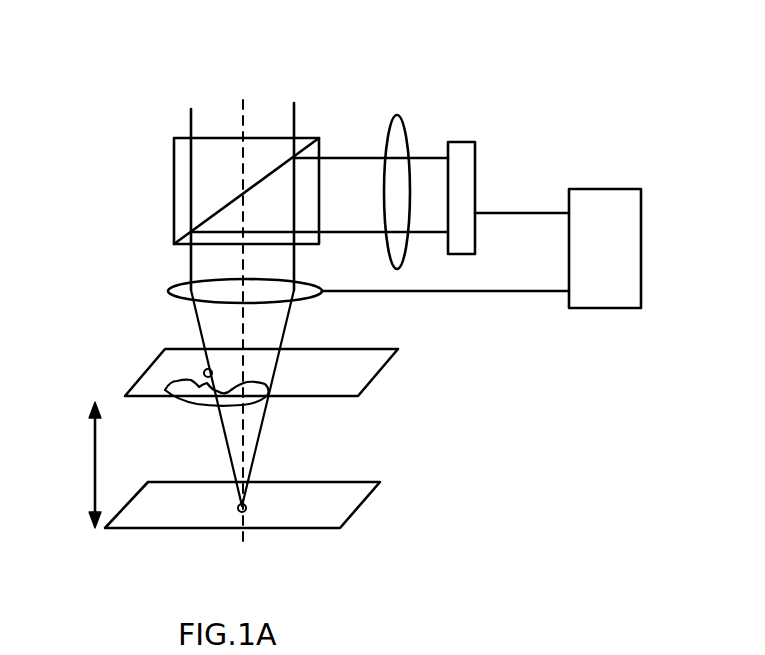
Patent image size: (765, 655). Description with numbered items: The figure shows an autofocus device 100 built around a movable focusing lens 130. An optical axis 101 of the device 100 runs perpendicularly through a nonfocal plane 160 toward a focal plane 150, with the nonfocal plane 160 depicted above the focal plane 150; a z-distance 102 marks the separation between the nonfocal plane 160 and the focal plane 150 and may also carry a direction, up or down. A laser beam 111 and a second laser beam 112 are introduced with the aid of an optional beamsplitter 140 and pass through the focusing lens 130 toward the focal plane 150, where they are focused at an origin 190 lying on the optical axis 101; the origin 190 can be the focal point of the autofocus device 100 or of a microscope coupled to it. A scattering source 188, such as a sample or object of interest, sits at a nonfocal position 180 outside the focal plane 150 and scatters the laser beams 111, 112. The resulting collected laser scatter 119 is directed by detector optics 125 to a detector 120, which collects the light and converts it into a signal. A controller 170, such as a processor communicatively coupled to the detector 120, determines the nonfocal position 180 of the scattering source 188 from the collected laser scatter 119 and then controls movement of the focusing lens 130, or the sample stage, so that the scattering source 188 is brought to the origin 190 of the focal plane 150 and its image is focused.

The autofocus device 100 is at (142, 52).
The optical axis 101 is at (241, 570).
The z-distance 102 is at (93, 470).
The laser beam 111 is at (188, 259).
The second laser beam 112 is at (297, 262).
The collected laser scatter 119 is at (425, 233).
The detector 120 is at (476, 157).
The detector optics 125 is at (403, 122).
The focusing lens 130 is at (170, 293).
The beamsplitter 140 is at (172, 211).
The focal plane 150 is at (357, 506).
The nonfocal plane 160 is at (398, 349).
The controller 170 is at (590, 296).
The nonfocal position 180 is at (203, 368).
The scattering source 188 is at (158, 388).
The origin 190 is at (246, 508).